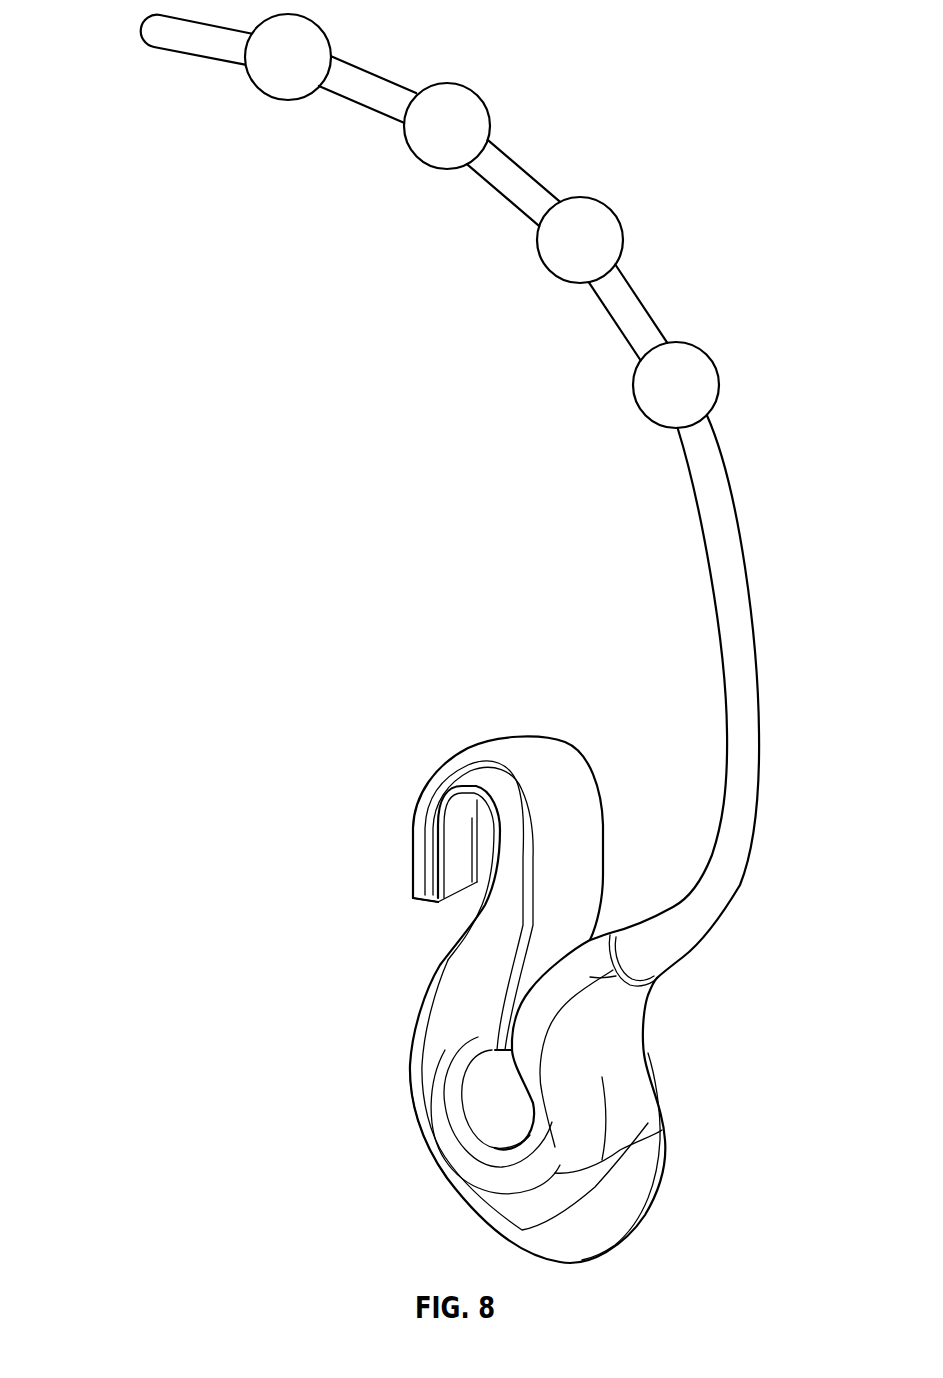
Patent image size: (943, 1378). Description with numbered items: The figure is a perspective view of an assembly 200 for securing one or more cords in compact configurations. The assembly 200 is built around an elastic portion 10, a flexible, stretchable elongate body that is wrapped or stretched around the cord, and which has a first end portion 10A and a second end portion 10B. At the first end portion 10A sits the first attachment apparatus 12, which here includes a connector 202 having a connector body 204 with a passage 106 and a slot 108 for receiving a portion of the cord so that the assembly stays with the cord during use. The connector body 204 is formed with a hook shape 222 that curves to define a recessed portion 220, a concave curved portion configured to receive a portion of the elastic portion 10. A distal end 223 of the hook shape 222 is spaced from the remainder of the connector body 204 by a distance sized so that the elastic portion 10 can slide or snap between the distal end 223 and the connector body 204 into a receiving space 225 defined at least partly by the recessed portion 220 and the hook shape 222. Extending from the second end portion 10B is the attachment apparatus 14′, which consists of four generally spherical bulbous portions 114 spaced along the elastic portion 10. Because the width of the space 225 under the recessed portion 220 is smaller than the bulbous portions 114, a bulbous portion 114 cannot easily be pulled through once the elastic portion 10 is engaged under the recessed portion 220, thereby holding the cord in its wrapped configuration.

The elastic portion 10 is at (700, 470).
The first end portion 10A is at (702, 932).
The second end portion 10B is at (157, 32).
The first attachment apparatus 12 is at (731, 1207).
The attachment apparatus 14′ is at (668, 167).
The passage 106 is at (515, 1108).
The slot 108 is at (505, 1033).
The bulbous portions 114 is at (262, 84).
The assembly 200 is at (209, 194).
The connector 202 is at (350, 1019).
The connector body 204 is at (403, 1072).
The recessed portion 220 is at (488, 832).
The hook shape 222 is at (413, 832).
The distal end 223 is at (420, 905).
The receiving space 225 is at (488, 814).